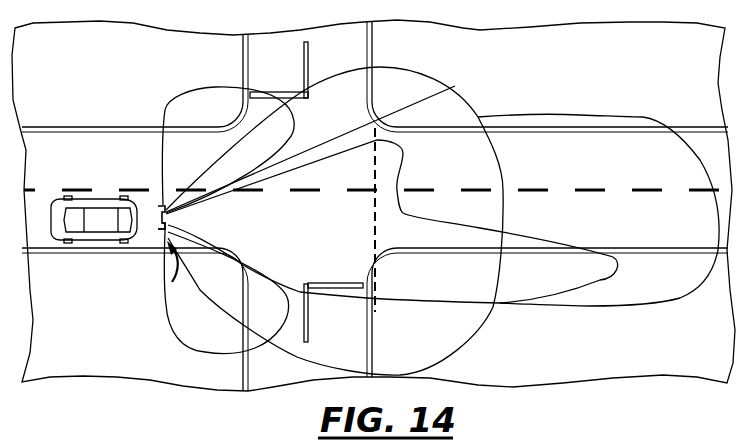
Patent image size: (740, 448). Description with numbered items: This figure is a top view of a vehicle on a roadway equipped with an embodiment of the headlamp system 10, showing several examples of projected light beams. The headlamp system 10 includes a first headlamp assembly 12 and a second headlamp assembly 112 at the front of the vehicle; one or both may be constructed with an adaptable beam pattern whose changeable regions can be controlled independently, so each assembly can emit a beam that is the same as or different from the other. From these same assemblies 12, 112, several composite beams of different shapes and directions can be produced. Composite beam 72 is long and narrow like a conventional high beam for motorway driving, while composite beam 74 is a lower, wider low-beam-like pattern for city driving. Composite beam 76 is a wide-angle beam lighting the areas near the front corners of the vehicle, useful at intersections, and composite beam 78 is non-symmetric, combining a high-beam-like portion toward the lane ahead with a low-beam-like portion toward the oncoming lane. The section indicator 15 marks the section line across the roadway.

The headlamp system 10 is at (173, 280).
The first headlamp assembly 12 is at (160, 207).
The section line 15- 15 is at (375, 128).
The composite beam 72 is at (643, 118).
The composite beam 74 is at (449, 86).
The composite beam 76 is at (233, 90).
The composite beam 78 is at (600, 283).
The second headlamp assembly 112 is at (162, 232).